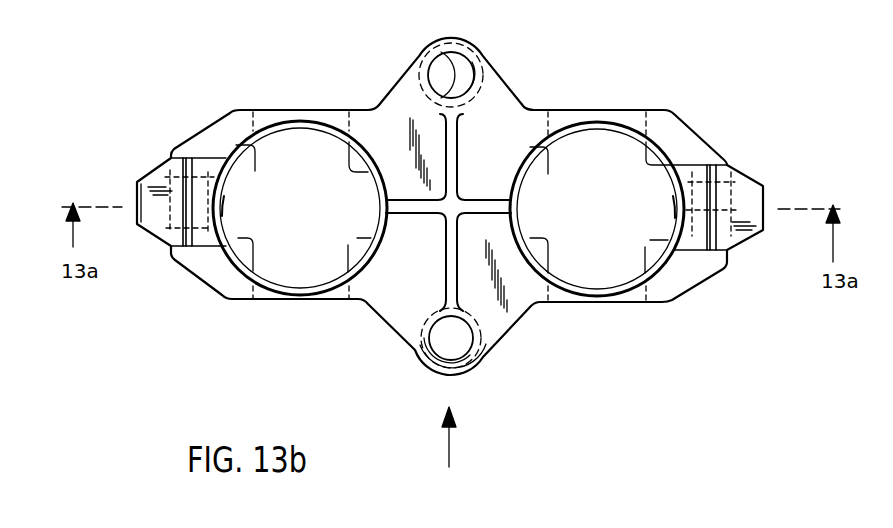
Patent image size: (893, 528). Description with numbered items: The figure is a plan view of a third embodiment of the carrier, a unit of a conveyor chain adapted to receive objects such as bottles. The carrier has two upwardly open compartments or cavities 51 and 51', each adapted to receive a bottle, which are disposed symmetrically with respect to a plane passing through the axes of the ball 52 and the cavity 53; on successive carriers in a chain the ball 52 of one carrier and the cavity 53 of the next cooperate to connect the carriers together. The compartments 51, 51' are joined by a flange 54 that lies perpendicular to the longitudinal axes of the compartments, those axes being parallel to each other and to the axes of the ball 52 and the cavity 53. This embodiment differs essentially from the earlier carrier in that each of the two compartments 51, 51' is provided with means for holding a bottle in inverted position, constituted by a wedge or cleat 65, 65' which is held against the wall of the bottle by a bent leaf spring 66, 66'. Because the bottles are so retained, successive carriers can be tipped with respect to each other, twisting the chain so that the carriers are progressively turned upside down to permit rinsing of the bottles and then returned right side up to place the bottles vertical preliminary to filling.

The compartment 51 is at (597, 184).
The compartment 51' is at (300, 179).
The ball 52 is at (460, 72).
The cavity 53 is at (428, 377).
The flange 54 is at (505, 153).
The wedge or cleat 65 is at (597, 209).
The wedge or cleat 65' is at (300, 208).
The bent leaf spring 66 is at (733, 193).
The bent leaf spring 66' is at (183, 184).